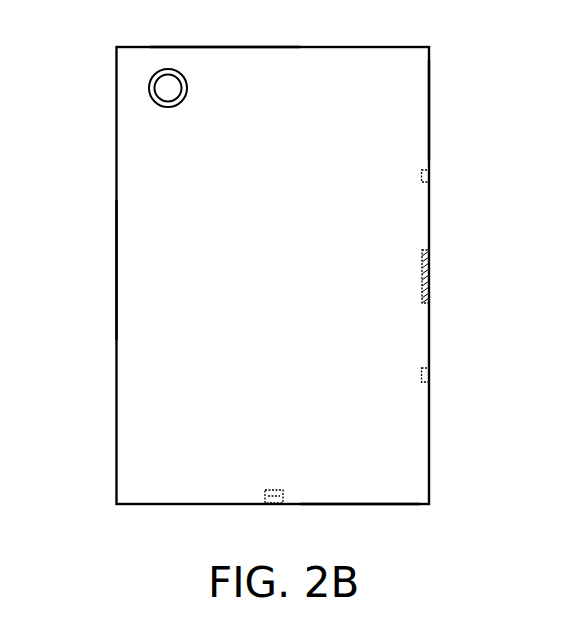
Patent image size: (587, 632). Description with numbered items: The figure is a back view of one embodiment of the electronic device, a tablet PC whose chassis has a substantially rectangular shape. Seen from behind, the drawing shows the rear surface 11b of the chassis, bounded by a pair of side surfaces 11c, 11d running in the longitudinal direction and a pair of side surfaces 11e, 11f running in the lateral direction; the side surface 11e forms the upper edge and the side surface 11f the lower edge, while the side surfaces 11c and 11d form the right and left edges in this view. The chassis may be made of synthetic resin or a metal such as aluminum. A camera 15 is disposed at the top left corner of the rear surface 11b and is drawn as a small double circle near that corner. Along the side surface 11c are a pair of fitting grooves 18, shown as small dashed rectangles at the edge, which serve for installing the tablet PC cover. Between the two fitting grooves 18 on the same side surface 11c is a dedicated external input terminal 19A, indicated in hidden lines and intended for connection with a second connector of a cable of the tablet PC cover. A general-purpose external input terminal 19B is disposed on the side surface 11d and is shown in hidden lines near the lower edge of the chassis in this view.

The rear surface 11b is at (405, 63).
The side surface 11c is at (430, 107).
The side surface 11d is at (116, 270).
The side surface 11e is at (213, 47).
The side surface 11f is at (375, 505).
The camera 15 is at (149, 89).
The fitting grooves 18 is at (432, 179).
The dedicated external input terminal 19A is at (437, 275).
The general-purpose external input terminal 19B is at (272, 488).